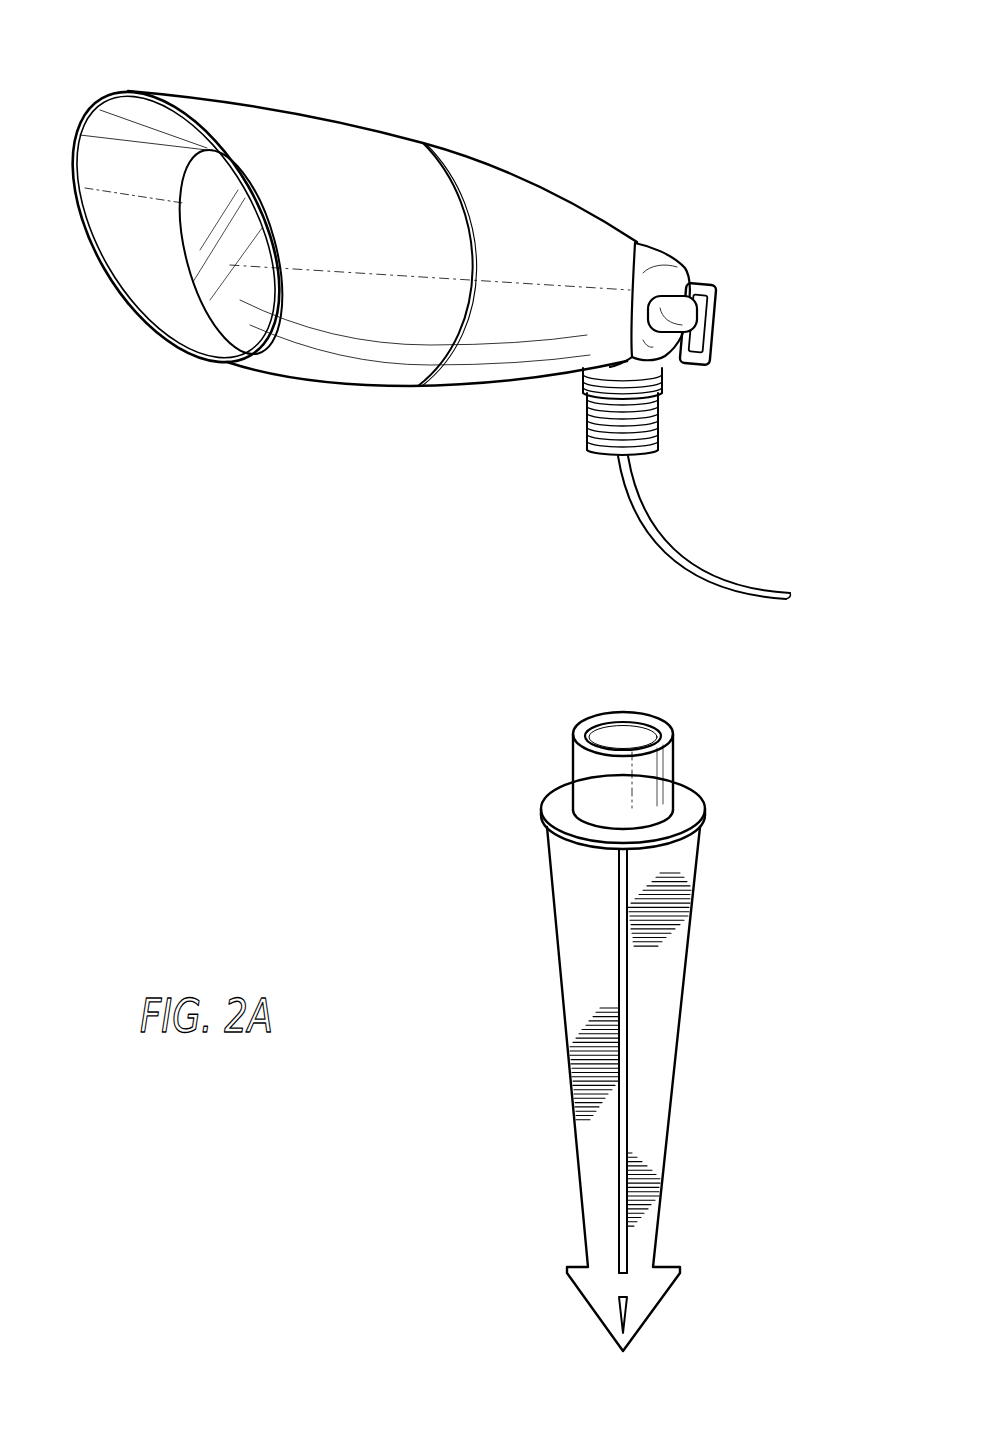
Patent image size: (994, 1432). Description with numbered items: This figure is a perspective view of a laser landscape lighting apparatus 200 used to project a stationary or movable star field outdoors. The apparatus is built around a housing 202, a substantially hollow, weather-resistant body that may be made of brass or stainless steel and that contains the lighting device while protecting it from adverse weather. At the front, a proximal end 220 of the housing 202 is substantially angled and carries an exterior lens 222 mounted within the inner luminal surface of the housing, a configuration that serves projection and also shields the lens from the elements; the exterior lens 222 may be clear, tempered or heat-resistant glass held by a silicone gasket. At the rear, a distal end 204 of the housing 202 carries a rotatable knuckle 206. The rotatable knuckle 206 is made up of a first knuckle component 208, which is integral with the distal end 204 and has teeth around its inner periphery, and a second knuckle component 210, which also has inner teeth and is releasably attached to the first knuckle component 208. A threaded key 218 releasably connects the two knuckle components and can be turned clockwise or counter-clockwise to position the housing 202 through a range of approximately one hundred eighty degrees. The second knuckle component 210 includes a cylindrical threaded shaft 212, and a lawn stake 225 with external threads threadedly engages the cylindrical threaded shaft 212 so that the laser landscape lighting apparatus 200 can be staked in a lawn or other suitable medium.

The laser landscape lighting apparatus 200 is at (566, 88).
The housing 202 is at (310, 122).
The distal end 204 is at (612, 188).
The rotatable knuckle 206 is at (667, 207).
The first knuckle component 208 is at (684, 257).
The second knuckle component 210 is at (633, 240).
The cylindrical threaded shaft 212 is at (587, 423).
The threaded key 218 is at (710, 327).
The proximal end 220 is at (62, 75).
The exterior lens 222 is at (227, 297).
The lawn stake 225 is at (553, 883).